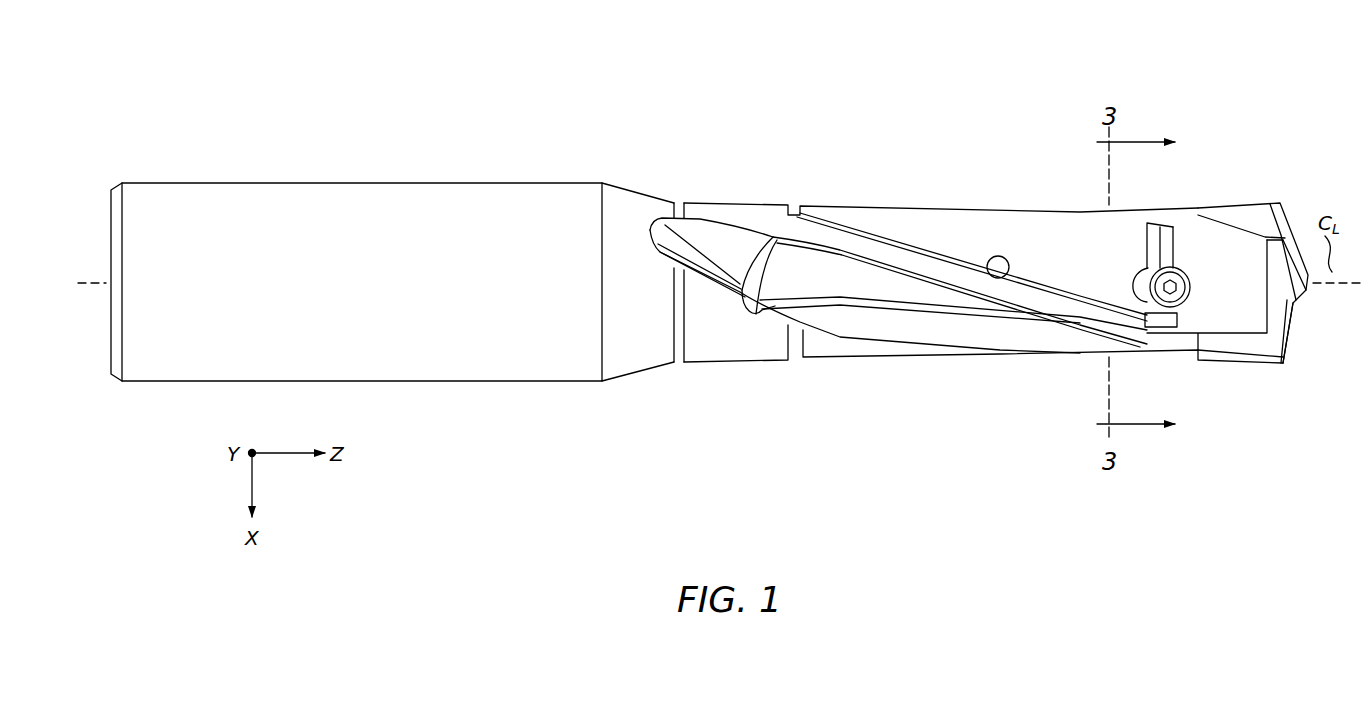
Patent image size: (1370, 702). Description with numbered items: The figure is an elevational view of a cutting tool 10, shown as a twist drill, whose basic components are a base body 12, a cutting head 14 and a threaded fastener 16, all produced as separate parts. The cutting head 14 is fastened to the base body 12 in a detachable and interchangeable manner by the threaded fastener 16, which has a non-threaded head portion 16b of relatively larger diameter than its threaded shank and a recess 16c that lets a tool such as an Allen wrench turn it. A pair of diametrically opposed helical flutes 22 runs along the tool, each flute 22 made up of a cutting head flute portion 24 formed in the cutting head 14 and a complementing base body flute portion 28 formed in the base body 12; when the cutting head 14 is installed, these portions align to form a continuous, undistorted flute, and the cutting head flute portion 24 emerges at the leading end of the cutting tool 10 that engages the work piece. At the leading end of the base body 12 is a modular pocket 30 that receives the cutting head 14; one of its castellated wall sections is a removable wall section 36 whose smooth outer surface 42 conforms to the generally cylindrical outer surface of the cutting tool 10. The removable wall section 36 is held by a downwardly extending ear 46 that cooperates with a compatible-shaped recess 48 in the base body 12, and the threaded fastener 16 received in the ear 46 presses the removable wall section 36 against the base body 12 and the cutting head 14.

The cutting tool 10 is at (966, 66).
The base body 12 is at (555, 412).
The cutting head 14 is at (1263, 188).
The threaded fastener 16 is at (1186, 318).
The non-threaded head portion 16b is at (1160, 265).
The recess 16c is at (1188, 272).
The helical flute 22 is at (898, 303).
The cutting head flute portion 24 is at (1248, 223).
The base body flute portion 28 is at (967, 322).
The modular pocket 30 is at (1290, 367).
The removable wall section 36 is at (1236, 313).
The smooth outer surface 42 is at (1251, 318).
The downwardly extending ear 46 is at (1146, 271).
The recess 48 is at (1146, 302).